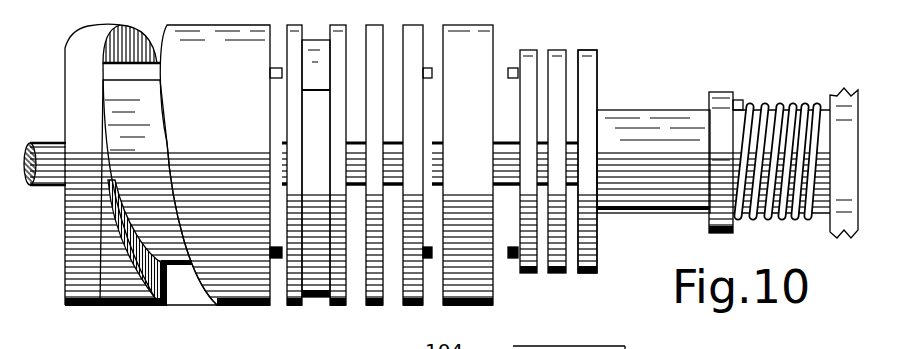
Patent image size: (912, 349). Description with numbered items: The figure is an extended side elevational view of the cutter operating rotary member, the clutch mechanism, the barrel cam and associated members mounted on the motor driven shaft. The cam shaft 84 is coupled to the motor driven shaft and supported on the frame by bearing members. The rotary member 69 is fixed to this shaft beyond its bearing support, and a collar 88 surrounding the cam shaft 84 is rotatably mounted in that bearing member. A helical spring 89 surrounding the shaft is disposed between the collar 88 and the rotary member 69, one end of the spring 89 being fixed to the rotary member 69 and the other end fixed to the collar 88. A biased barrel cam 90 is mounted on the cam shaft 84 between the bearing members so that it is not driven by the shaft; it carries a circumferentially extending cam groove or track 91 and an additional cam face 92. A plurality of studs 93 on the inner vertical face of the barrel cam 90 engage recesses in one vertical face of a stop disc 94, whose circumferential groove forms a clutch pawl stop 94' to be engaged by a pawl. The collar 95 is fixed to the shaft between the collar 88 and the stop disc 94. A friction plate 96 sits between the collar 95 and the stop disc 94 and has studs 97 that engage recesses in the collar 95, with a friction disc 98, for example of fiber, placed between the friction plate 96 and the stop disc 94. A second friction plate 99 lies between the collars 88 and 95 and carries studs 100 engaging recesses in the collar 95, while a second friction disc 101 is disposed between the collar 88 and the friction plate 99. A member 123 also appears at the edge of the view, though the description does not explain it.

The cam shaft 84 is at (38, 188).
The cam face 92 is at (68, 42).
The barrel cam 90 is at (125, 307).
The cam groove 91 is at (166, 288).
The studs 93 is at (275, 262).
The stop disc 94 is at (316, 181).
The clutch pawl stop 94' is at (319, 168).
The friction disc 98 is at (369, 302).
The friction plate 96 is at (408, 42).
The studs 97 is at (428, 67).
The collar 95 is at (468, 165).
The studs 100 is at (512, 67).
The second friction plate 99 is at (522, 272).
The second friction disc 101 is at (557, 55).
The collar 88 is at (645, 200).
The helical spring 89 is at (763, 103).
The rotary member 69 is at (844, 163).
The member 123 is at (517, 348).